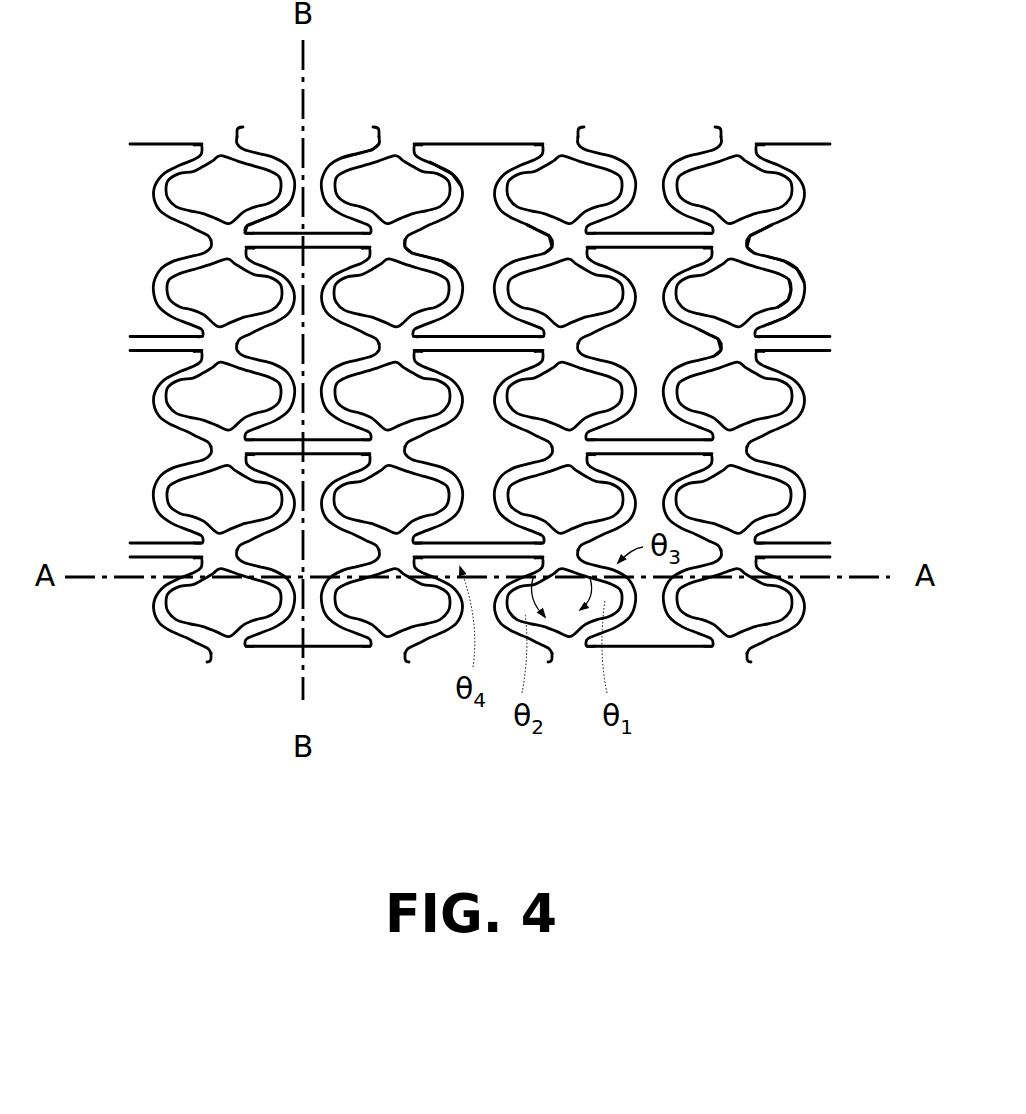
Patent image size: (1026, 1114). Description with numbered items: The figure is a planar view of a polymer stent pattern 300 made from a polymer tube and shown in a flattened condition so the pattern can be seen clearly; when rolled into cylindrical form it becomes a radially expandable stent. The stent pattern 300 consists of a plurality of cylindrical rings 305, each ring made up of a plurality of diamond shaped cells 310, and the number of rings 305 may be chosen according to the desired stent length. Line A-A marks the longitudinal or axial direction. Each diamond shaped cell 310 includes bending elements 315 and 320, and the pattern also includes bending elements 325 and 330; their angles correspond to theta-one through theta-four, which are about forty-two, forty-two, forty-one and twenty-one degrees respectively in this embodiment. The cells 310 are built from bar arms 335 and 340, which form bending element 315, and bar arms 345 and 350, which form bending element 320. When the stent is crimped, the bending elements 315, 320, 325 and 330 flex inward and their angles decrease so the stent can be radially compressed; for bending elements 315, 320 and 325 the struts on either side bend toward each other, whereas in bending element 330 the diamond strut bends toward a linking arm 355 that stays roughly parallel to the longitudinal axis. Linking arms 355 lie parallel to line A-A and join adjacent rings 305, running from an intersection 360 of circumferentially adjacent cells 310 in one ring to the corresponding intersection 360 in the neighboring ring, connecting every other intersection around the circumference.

The stent pattern 300 is at (777, 673).
The cylindrical ring 305 is at (480, 453).
The diamond shaped cell 310 is at (393, 610).
The bending element 315 is at (435, 168).
The bending element 320 is at (416, 210).
The bending element 325 is at (470, 250).
The bending element 330 is at (292, 200).
The bar arm 335 is at (780, 265).
The bar arm 340 is at (780, 302).
The bar arm 345 is at (773, 292).
The bar arm 350 is at (713, 322).
The linking arm 355 is at (632, 238).
The intersection 360 is at (573, 232).